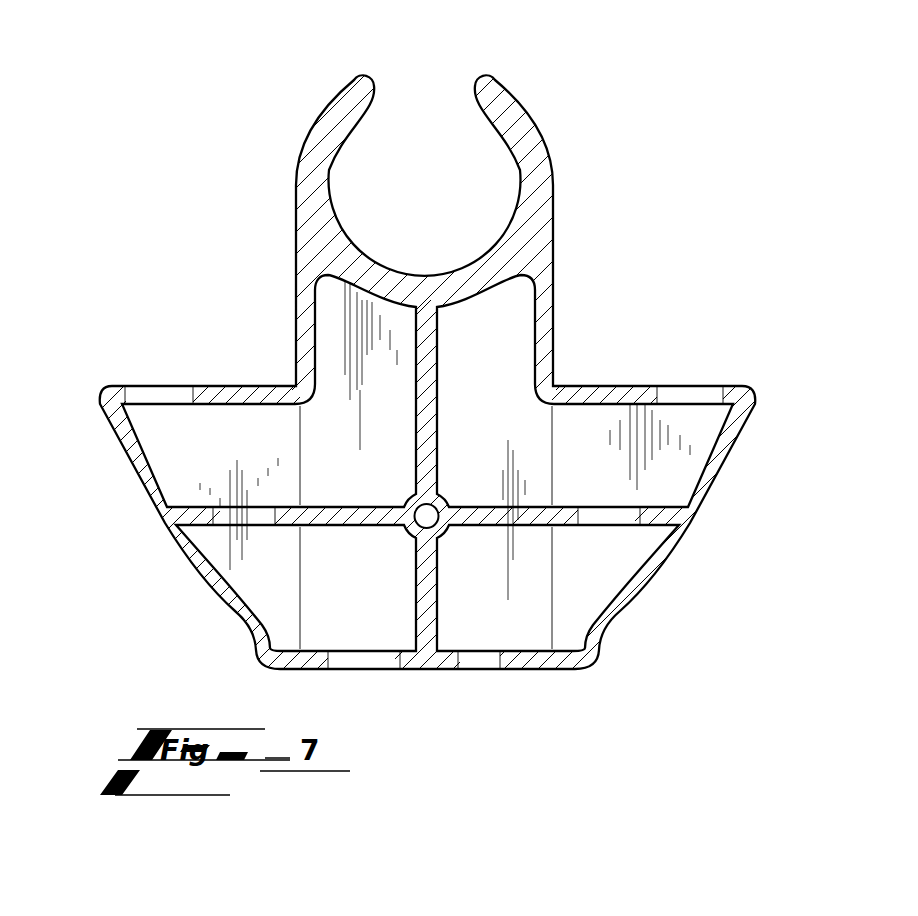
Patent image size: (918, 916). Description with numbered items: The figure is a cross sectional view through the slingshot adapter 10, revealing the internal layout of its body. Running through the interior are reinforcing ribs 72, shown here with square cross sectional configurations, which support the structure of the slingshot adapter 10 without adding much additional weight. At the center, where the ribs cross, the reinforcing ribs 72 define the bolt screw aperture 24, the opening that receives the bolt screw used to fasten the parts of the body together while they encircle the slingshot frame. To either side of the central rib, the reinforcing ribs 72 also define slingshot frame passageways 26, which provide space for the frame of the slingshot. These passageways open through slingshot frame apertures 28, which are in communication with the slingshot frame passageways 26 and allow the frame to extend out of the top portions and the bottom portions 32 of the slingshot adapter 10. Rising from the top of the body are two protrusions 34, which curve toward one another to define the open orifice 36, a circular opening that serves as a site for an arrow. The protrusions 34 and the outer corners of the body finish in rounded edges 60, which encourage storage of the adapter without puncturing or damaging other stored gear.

The slingshot adapter 10 is at (687, 246).
The bolt screw aperture 24 is at (452, 500).
The slingshot frame passageways 26 is at (221, 526).
The slingshot frame apertures 28 is at (162, 386).
The bottom portions 32 is at (434, 670).
The protrusions 34 is at (305, 240).
The open orifice 36 is at (410, 142).
The rounded edges 60 is at (371, 78).
The reinforcing ribs 72 is at (415, 457).